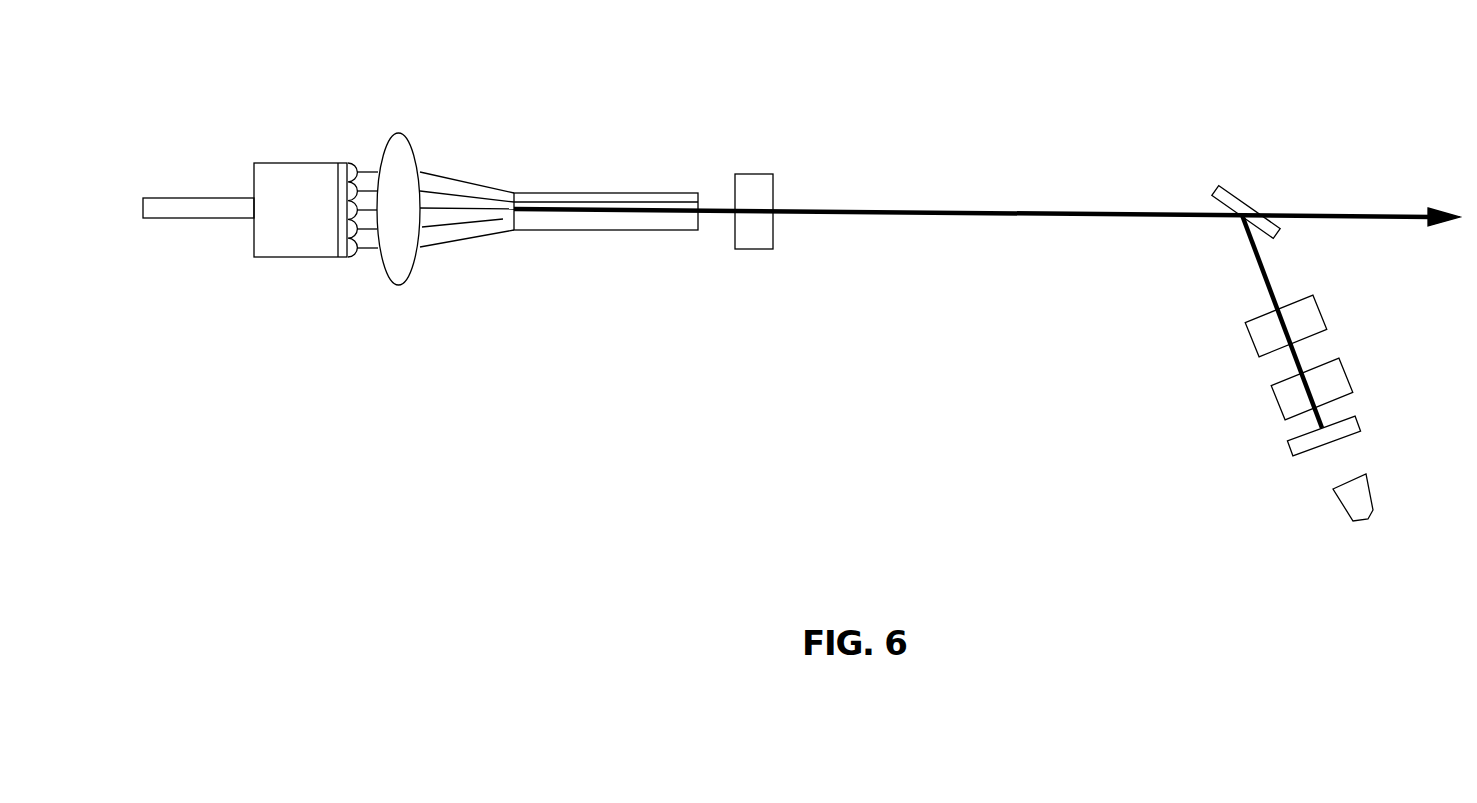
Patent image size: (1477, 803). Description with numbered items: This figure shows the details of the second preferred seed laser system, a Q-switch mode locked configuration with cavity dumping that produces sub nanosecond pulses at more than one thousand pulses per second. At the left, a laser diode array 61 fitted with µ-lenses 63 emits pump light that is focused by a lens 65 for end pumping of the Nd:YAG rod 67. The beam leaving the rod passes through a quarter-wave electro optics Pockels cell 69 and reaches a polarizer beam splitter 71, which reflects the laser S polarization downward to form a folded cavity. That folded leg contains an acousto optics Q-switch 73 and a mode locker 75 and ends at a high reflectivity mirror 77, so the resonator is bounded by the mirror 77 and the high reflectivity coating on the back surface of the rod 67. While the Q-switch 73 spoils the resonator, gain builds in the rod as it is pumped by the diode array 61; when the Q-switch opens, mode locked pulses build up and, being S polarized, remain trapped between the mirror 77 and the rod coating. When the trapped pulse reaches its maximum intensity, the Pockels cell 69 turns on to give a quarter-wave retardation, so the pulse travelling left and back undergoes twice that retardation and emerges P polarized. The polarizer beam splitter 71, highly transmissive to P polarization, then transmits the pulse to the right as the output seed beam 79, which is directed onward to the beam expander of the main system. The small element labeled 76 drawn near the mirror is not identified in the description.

The laser diode array 61 is at (303, 162).
The µ-lenses 63 is at (347, 258).
The lens 65 is at (410, 142).
The Nd:YAG rod 67 is at (587, 230).
The electro optics Pockels cell 69 is at (763, 172).
The polarizer beam splitter 71 is at (1237, 197).
The acousto optics Q-switch 73 is at (1250, 345).
The mode locker 75 is at (1282, 415).
The detector 76 is at (1338, 503).
The high reflectivity mirror 77 is at (1352, 440).
The output seed beam 79 is at (1412, 242).